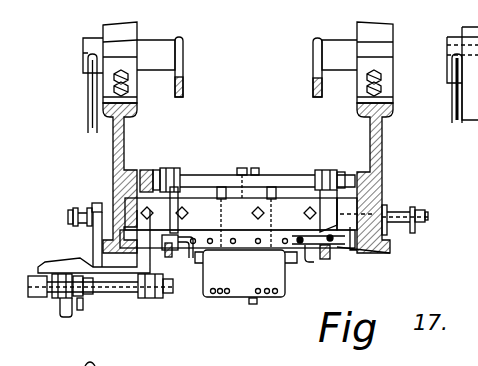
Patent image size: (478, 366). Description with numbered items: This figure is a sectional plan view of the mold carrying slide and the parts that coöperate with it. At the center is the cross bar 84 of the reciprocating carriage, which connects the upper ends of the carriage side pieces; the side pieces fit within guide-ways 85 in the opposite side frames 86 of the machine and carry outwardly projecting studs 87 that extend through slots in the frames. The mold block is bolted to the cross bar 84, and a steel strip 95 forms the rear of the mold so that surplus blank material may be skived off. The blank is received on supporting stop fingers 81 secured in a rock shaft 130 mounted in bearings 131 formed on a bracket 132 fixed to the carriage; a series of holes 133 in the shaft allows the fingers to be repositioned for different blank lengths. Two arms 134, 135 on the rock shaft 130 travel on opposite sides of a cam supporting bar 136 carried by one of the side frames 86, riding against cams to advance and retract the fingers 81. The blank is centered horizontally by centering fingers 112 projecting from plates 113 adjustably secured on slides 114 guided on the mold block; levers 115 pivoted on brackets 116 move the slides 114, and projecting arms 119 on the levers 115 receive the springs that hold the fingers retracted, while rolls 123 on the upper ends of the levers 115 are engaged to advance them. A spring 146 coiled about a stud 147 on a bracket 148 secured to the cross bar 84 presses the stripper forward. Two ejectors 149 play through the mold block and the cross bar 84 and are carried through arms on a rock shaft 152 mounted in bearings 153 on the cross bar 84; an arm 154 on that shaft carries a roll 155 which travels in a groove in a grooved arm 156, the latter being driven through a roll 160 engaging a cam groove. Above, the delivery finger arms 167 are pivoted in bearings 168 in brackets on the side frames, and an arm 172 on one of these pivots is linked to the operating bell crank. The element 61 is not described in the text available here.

The frame 61 is at (252, 365).
The blank supporting stop fingers 81 is at (208, 258).
The cross bar 84 is at (283, 210).
The guide-ways 85 is at (393, 216).
The frames 86 is at (114, 133).
The outwardly projecting studs 87 is at (397, 223).
The steel strip 95 is at (288, 265).
The centering fingers 112 is at (308, 257).
The plates 113 is at (333, 257).
The slides 114 is at (328, 252).
The levers 115 is at (328, 238).
The brackets 116 is at (323, 230).
The projecting arms 119 is at (312, 257).
The rolls 123 is at (332, 254).
The rock shaft 130 is at (118, 288).
The bearings 131 is at (48, 298).
The bracket 132 is at (80, 255).
The series of holes 133 is at (255, 298).
The arm 134 is at (66, 317).
The arm 135 is at (82, 311).
The cam supporting bar 136 is at (303, 362).
The spring 146 is at (245, 168).
The stud 147 is at (244, 172).
The bracket 148 is at (254, 168).
The ejectors 149 is at (203, 190).
The rock shaft 152 is at (192, 177).
The bearings 153 is at (177, 168).
The arm 154 is at (158, 170).
The roll 155 is at (151, 170).
The grooved arm 156 is at (116, 158).
The roll 160 is at (114, 359).
The arms 167 is at (182, 80).
The bearings 168 is at (387, 87).
The arm 172 is at (93, 88).